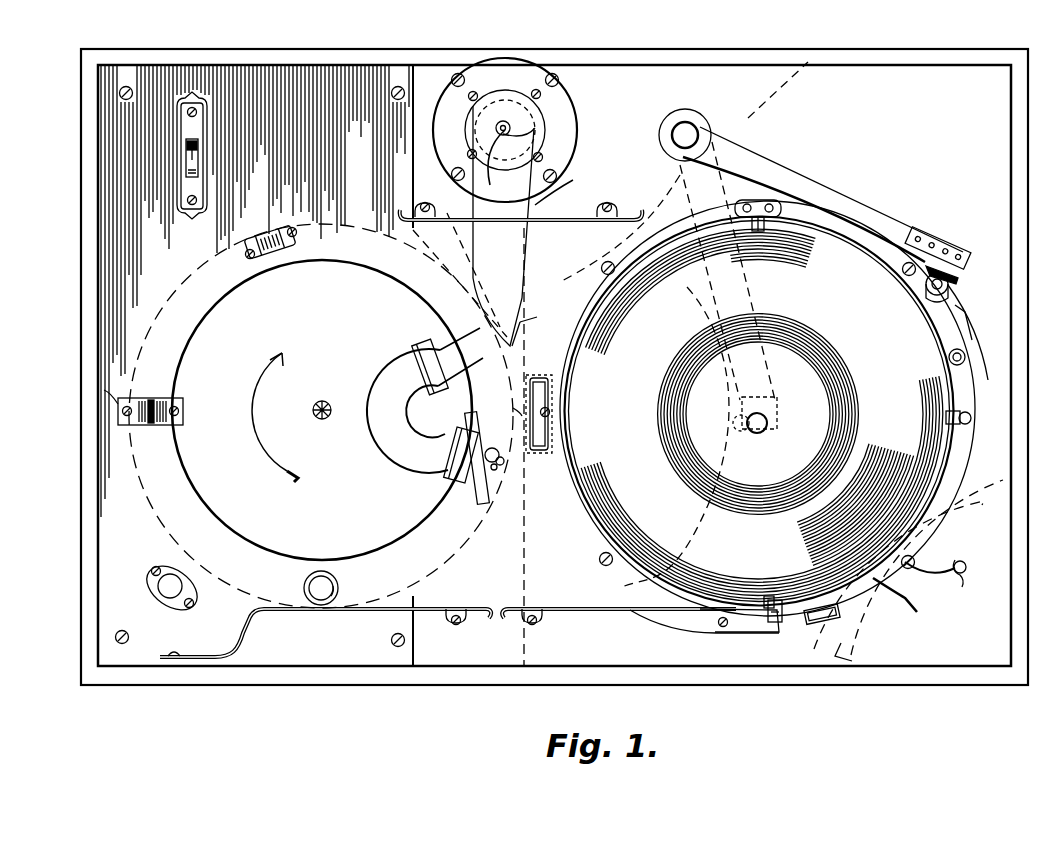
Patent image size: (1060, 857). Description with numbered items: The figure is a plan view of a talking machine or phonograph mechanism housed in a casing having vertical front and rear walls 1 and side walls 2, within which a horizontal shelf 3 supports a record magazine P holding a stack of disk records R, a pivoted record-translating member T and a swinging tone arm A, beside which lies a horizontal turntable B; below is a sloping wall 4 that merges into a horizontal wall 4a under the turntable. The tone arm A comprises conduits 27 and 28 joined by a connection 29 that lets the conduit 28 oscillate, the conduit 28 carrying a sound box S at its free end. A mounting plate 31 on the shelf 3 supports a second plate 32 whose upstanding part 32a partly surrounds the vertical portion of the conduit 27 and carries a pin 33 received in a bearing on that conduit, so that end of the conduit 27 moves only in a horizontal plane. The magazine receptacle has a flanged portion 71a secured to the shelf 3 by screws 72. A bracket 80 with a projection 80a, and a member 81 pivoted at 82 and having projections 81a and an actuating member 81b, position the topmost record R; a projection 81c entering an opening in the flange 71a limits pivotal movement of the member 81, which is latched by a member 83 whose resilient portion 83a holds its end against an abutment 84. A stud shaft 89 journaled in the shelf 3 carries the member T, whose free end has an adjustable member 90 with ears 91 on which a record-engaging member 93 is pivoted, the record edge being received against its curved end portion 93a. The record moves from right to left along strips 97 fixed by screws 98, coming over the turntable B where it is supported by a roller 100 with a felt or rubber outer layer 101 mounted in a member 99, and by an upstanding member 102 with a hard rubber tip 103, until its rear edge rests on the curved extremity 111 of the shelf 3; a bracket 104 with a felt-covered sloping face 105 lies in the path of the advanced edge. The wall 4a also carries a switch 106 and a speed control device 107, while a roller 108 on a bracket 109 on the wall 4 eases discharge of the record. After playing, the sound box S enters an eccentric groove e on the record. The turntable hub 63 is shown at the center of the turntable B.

The front and rear walls 1 is at (532, 52).
The side walls 2 is at (97, 228).
The shelf 3 is at (410, 647).
The sloping wall 4 is at (755, 115).
The horizontal wall 4a is at (428, 70).
The conduit 27 is at (520, 300).
The conduit 28 is at (390, 447).
The connection 29 is at (420, 345).
The mounting plate 31 is at (575, 120).
The second plate 32 is at (545, 115).
The upstanding part 32a is at (470, 108).
The pin 33 is at (511, 163).
The turntable spindle 63 is at (318, 418).
The flanged portion 71a is at (580, 524).
The screws 72 is at (600, 562).
The bracket 80 is at (758, 200).
The projection 80a is at (782, 215).
The member 81 is at (903, 598).
The projections 81a is at (947, 420).
The actuating member 81b is at (962, 573).
The projection 81c is at (953, 407).
The pivot 82 is at (948, 357).
The latching member 83 is at (726, 630).
The resilient portion 83a is at (770, 618).
The abutment 84 is at (825, 624).
The stud shaft 89 is at (688, 128).
The member 90 is at (962, 250).
The ears 91 is at (952, 288).
The record-engaging member 93 is at (935, 280).
The curved end portion 93a is at (966, 312).
The strips 97 is at (585, 216).
The screws 98 is at (612, 208).
The member 99 is at (288, 232).
The roller 100 is at (262, 233).
The outer layer 101 is at (252, 258).
The upstanding member 102 is at (338, 592).
The tip 103 is at (303, 584).
The bracket 104 is at (104, 390).
The sloping face 105 is at (158, 398).
The switch 106 is at (190, 165).
The speed control device 107 is at (160, 576).
The roller 108 is at (550, 395).
The bracket 109 is at (550, 436).
The curved extremity 111 is at (513, 408).
The tone arm A is at (560, 188).
The turntable B is at (212, 302).
The disk records R is at (128, 490).
The sound box S is at (473, 505).
The record-translating member T is at (872, 196).
The record magazine P is at (672, 620).
The eccentric groove e is at (772, 438).